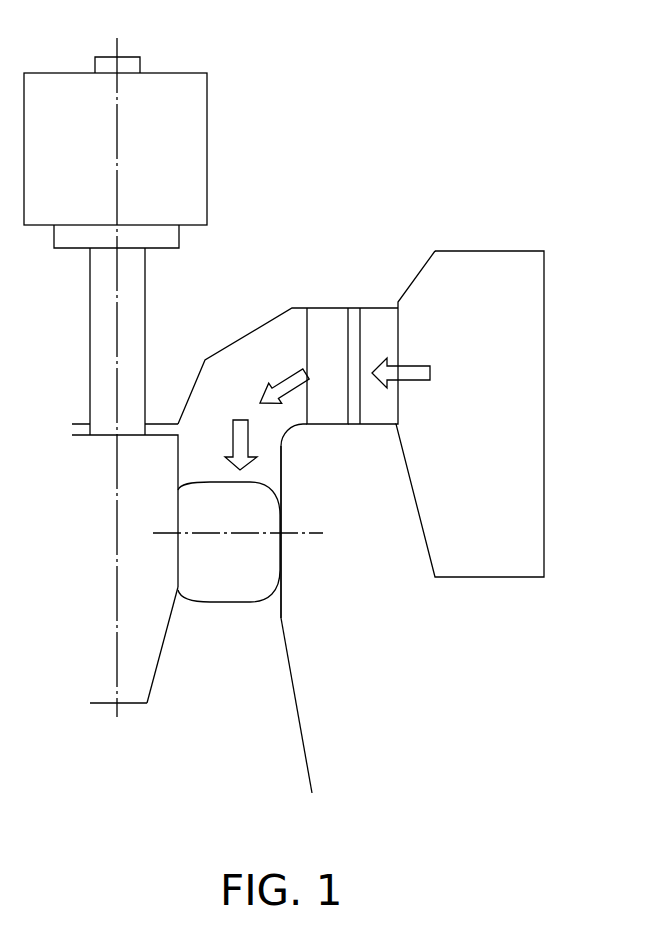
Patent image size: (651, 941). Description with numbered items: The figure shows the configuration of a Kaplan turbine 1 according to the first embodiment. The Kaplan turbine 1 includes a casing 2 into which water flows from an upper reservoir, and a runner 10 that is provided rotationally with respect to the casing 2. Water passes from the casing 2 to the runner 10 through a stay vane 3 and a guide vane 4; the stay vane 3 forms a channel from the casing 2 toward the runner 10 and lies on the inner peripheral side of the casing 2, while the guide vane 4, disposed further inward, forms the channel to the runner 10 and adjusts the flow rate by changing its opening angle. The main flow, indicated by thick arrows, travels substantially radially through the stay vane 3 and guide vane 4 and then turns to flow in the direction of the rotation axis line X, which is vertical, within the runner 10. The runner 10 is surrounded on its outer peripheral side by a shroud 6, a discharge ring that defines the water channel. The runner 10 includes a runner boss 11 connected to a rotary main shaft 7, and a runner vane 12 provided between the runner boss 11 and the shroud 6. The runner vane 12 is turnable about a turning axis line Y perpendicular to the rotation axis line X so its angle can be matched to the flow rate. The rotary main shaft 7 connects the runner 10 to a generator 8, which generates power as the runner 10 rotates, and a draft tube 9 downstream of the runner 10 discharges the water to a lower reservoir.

The Kaplan turbine 1 is at (528, 152).
The casing 2 is at (537, 336).
The stay vane 3 is at (379, 318).
The guide vane 4 is at (328, 317).
The shroud 6 is at (280, 618).
The rotary main shaft 7 is at (98, 325).
The generator 8 is at (200, 87).
The draft tube 9 is at (303, 767).
The runner 10 is at (138, 708).
The runner boss 11 is at (142, 670).
The runner vane 12 is at (258, 566).
The rotation axis line X is at (115, 635).
The turning axis line Y is at (303, 532).